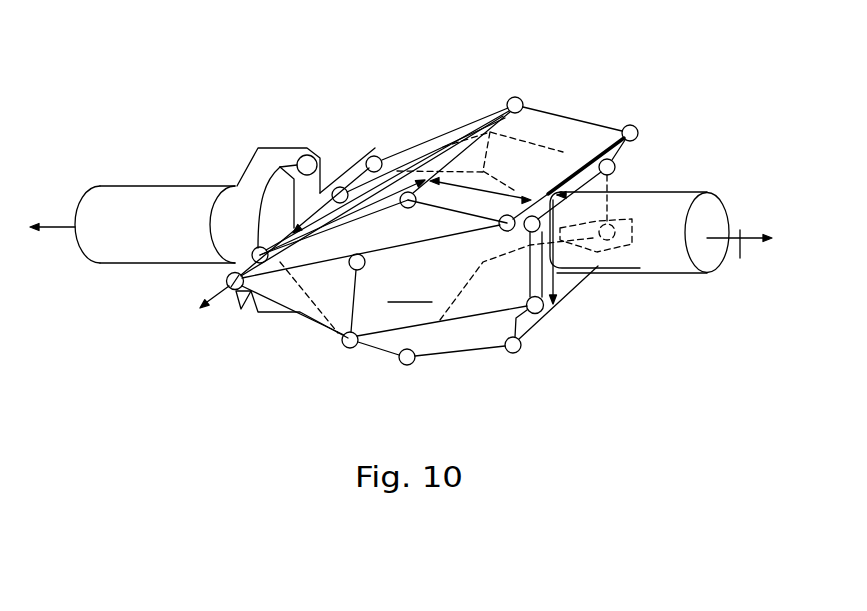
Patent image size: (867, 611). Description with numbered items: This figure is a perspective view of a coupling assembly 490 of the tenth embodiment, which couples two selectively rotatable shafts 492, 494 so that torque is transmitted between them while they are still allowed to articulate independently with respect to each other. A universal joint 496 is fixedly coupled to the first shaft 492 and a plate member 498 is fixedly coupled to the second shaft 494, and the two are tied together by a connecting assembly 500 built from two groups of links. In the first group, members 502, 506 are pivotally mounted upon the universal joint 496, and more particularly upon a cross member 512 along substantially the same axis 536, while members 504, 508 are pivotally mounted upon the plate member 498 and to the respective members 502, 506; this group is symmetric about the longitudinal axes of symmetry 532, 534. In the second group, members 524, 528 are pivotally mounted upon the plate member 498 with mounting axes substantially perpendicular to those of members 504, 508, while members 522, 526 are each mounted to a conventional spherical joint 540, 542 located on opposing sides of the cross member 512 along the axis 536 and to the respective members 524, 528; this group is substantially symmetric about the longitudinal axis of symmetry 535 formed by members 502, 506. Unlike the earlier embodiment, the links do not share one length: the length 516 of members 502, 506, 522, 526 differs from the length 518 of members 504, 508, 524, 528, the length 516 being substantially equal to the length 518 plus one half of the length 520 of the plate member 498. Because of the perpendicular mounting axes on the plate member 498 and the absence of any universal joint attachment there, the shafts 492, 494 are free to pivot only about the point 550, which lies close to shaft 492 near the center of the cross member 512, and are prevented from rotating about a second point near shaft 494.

The coupling assembly 490 is at (166, 108).
The shaft 492 is at (100, 185).
The shaft 494 is at (695, 192).
The universal joint 496 is at (250, 145).
The plate member 498 is at (537, 328).
The connecting assembly 500 is at (482, 115).
The member 502 is at (457, 128).
The member 504 is at (603, 125).
The member 506 is at (383, 350).
The member 508 is at (480, 340).
The cross member 512 is at (345, 165).
The length 516 is at (362, 156).
The length 518 is at (501, 214).
The length 520 is at (593, 272).
The member 522 is at (415, 158).
The member 524 is at (474, 180).
The member 526 is at (304, 313).
The member 528 is at (384, 258).
The longitudinal axis of symmetry 532 is at (48, 225).
The longitudinal axis of symmetry 534 is at (747, 237).
The longitudinal axis of symmetry 535 is at (740, 258).
The axis 536 is at (222, 297).
The spherical joint 540 is at (226, 280).
The spherical joint 542 is at (366, 150).
The point 550 is at (310, 212).